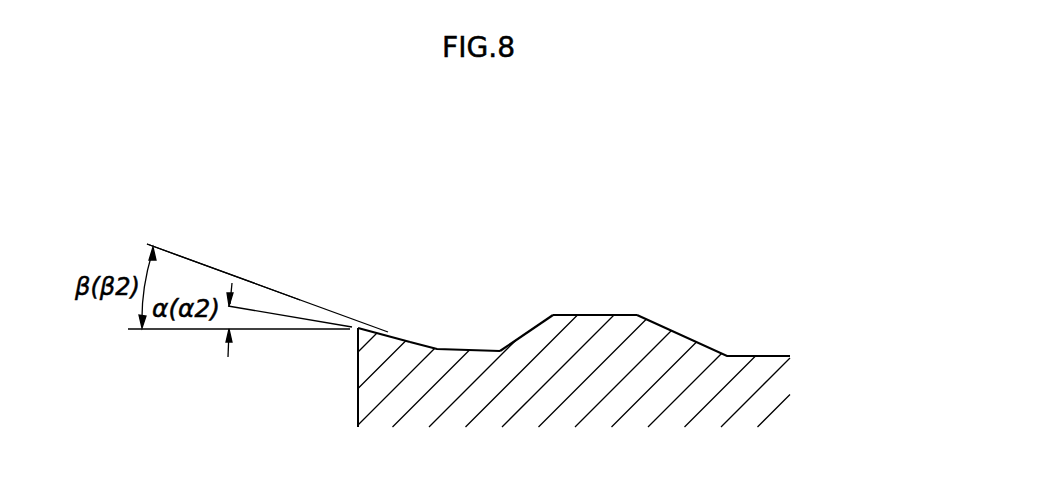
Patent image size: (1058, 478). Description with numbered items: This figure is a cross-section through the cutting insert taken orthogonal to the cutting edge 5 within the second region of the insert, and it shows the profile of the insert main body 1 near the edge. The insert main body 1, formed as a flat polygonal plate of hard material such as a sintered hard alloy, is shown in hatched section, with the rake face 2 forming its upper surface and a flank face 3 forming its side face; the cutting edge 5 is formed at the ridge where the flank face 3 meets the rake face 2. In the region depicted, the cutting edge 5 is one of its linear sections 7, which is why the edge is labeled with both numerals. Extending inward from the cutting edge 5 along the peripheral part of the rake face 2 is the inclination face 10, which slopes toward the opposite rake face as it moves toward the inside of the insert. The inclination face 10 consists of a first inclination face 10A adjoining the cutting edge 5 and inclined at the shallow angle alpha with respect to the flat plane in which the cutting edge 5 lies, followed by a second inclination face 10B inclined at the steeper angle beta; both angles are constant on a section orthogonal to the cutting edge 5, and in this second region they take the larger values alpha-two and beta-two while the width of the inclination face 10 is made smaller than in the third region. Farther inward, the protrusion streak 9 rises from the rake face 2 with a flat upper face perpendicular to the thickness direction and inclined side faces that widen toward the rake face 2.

The insert main body 1 is at (694, 256).
The rake face 2 is at (472, 297).
The flank face 3 is at (346, 382).
The cutting edge 5 is at (353, 325).
The linear section 7 is at (267, 263).
The protrusion streak 9 is at (591, 315).
The inclination face 10 is at (462, 227).
The first inclination face 10A is at (368, 328).
The second inclination face 10B is at (412, 343).